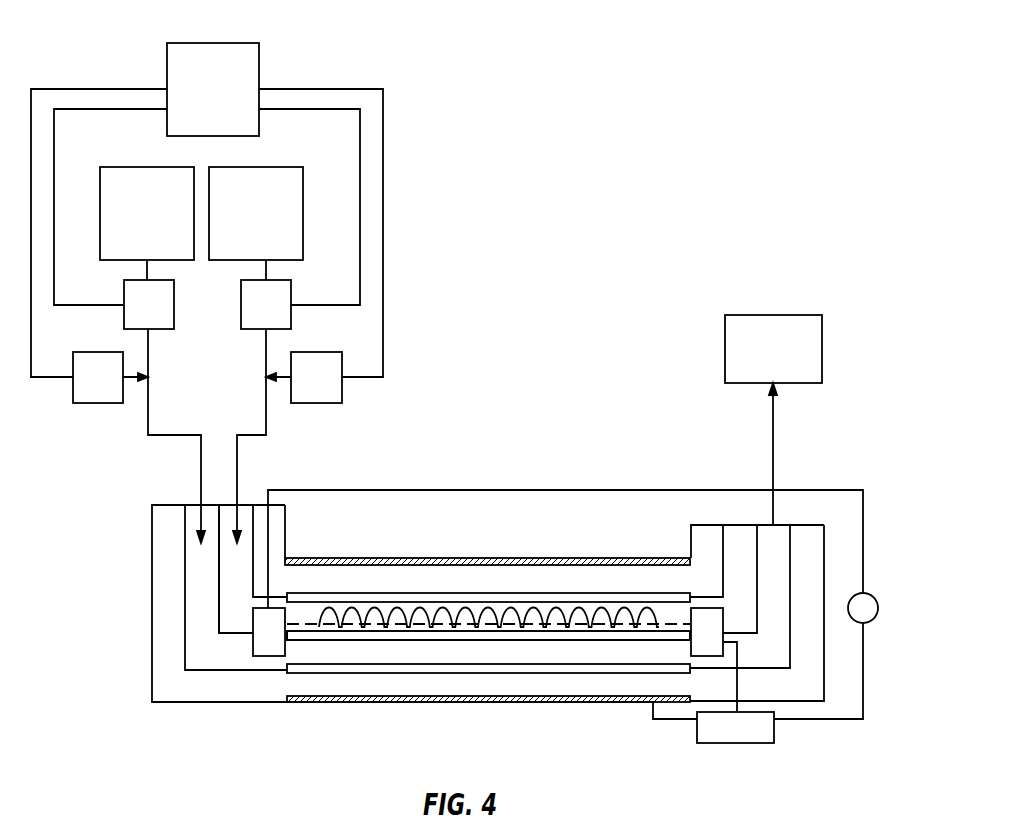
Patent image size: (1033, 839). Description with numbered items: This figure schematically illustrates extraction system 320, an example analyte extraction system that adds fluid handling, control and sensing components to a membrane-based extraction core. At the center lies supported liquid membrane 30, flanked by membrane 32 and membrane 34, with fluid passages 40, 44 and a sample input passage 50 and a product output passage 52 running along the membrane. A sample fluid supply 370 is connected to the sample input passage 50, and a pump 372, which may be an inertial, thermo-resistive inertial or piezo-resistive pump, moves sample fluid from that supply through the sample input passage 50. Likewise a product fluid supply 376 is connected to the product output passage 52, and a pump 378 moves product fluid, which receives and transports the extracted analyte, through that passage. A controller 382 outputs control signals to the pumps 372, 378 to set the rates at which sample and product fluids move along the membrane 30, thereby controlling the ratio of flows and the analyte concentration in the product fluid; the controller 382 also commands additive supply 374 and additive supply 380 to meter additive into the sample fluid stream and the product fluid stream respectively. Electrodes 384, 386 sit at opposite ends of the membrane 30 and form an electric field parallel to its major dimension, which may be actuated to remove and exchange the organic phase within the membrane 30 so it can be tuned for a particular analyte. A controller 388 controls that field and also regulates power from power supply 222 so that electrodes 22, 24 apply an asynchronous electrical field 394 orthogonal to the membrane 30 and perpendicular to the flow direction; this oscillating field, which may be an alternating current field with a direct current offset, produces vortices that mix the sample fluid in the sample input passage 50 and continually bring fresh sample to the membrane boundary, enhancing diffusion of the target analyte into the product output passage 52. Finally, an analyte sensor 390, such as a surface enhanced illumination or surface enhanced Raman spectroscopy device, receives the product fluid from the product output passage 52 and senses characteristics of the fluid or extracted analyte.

The controller 382 is at (260, 62).
The product fluid supply 376 is at (99, 184).
The sample fluid supply 370 is at (273, 165).
The pump 378 is at (175, 318).
The pump 372 is at (241, 318).
The additive supply 380 is at (107, 403).
The additive supply 374 is at (325, 403).
The analyte sensor 390 is at (822, 342).
The extraction system 320 is at (627, 183).
The fluid passage 40 is at (278, 512).
The sample input passage 50 is at (220, 607).
The electrode 22 is at (561, 558).
The membrane 32 is at (310, 597).
The asynchronous electrical field 394 is at (525, 617).
The product output passage 52 is at (461, 662).
The membrane 34 is at (392, 670).
The electrode 24 is at (545, 703).
The supported liquid membrane 30 is at (647, 632).
The fluid passage 44 is at (298, 685).
The electrode 384 is at (262, 656).
The electrode 386 is at (723, 620).
The controller 388 is at (718, 743).
The power supply 222 is at (879, 605).